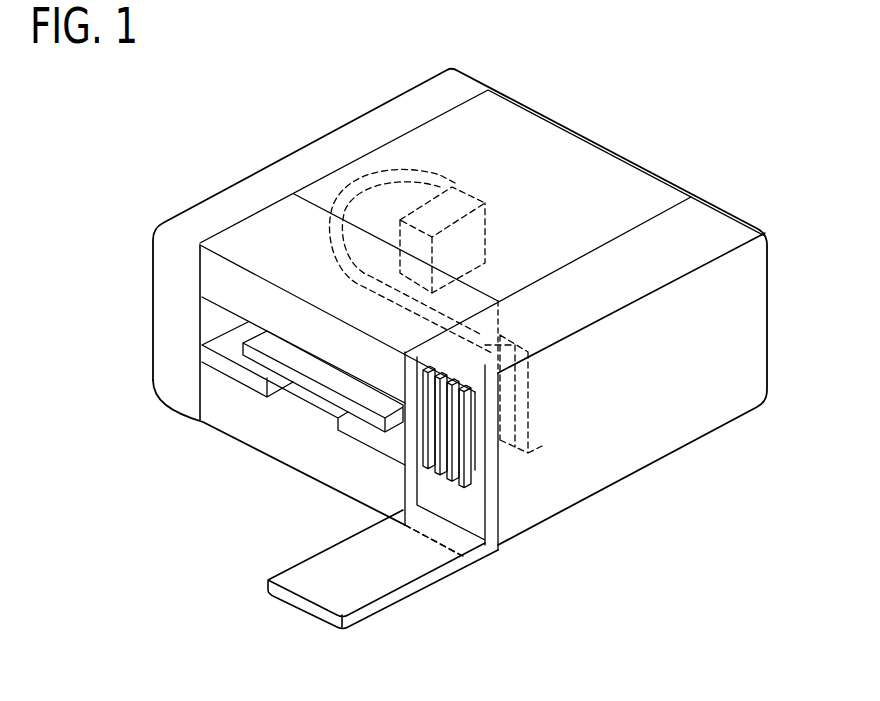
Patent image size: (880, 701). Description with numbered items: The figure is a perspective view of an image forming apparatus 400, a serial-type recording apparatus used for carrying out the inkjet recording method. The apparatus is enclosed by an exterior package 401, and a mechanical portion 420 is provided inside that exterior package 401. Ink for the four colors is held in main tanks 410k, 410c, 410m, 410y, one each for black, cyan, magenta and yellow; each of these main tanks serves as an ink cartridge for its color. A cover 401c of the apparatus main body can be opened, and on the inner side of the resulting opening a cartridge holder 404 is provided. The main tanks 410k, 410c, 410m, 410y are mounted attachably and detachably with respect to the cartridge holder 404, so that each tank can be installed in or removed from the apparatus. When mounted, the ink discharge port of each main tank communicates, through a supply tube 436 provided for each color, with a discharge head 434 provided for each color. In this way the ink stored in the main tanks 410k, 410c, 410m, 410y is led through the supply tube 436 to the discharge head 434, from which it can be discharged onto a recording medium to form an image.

The image forming apparatus 400 is at (696, 88).
The exterior package 401 is at (265, 162).
The cover 401c is at (410, 587).
The cartridge holder 404 is at (532, 412).
The main tank 410k is at (447, 445).
The main tank 410c is at (443, 456).
The main tank 410m is at (460, 463).
The main tank 410y is at (463, 465).
The mechanical portion 420 is at (548, 195).
The discharge head 434 is at (462, 188).
The supply tube 436 is at (362, 168).